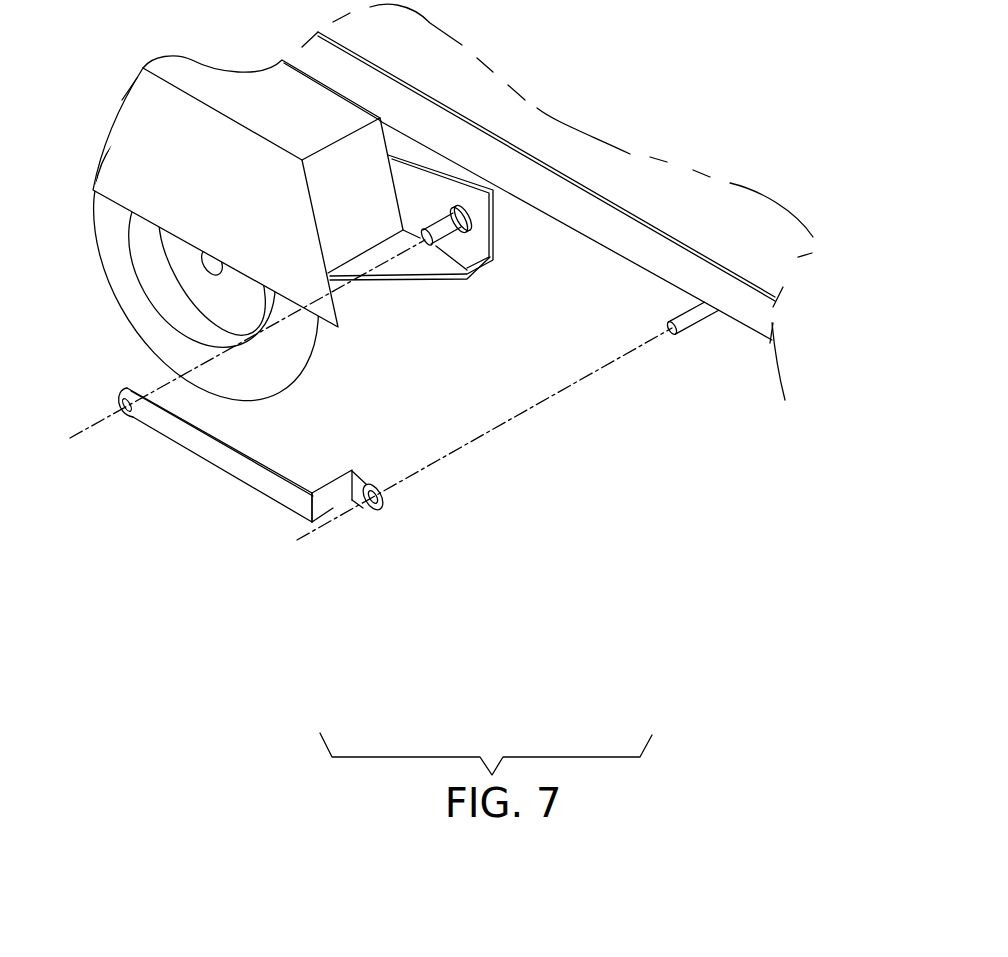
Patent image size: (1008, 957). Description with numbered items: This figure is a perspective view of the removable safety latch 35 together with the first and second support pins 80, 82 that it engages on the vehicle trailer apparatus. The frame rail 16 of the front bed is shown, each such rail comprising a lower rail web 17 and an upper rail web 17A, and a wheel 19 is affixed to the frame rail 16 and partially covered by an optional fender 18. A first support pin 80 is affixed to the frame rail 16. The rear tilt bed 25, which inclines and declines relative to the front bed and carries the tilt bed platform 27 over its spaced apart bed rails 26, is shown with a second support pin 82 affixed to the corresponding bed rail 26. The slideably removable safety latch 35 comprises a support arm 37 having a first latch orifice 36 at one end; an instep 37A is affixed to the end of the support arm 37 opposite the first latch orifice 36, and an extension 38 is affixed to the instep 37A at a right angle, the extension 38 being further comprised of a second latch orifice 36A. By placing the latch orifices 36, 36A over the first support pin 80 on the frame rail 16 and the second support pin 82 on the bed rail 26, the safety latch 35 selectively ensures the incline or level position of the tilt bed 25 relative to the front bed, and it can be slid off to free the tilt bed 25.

The frame rail 16 is at (462, 185).
The lower rail web 17 is at (470, 264).
The upper rail web 17A is at (447, 178).
The fender 18 is at (147, 132).
The wheel 19 is at (92, 246).
The tilt bed 25 is at (584, 226).
The bed rail 26 is at (752, 307).
The tilt bed platform 27 is at (625, 153).
The safety latch 35 is at (272, 493).
The first latch orifice 36 is at (128, 413).
The second latch orifice 36A is at (376, 512).
The support arm 37 is at (200, 462).
The instep 37A is at (330, 522).
The extension 38 is at (365, 478).
The first support pin 80 is at (445, 240).
The second support pin 82 is at (678, 337).